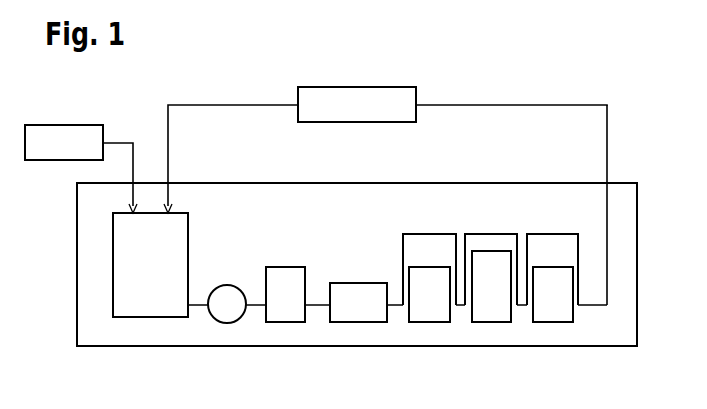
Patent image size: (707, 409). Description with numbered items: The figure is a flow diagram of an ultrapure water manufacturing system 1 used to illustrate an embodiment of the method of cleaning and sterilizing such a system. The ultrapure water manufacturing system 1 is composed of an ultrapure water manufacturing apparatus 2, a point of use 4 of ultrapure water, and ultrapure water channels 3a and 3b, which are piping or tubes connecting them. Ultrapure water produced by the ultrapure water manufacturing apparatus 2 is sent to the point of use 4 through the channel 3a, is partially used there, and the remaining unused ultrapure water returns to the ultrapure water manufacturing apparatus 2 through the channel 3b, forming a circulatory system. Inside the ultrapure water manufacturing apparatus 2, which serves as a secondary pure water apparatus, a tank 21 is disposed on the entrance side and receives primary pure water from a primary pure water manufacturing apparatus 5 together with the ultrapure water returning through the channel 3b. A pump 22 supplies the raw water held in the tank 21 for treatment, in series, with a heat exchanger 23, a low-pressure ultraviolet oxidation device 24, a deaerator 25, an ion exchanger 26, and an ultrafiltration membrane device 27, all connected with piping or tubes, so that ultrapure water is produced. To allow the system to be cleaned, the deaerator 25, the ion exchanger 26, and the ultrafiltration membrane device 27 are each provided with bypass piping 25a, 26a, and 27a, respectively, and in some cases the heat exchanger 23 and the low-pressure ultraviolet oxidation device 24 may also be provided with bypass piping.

The ultrapure water manufacturing system 1 is at (612, 101).
The ultrapure water manufacturing apparatus 2 is at (77, 341).
The ultrapure water channel 3a is at (506, 105).
The ultrapure water channel 3b is at (221, 105).
The point of use 4 is at (360, 87).
The primary pure water manufacturing apparatus 5 is at (64, 125).
The tank 21 is at (147, 318).
The pump 22 is at (225, 323).
The heat exchanger 23 is at (285, 322).
The low-pressure ultraviolet oxidation device 24 is at (355, 322).
The deaerator 25 is at (430, 322).
The bypass piping 25a is at (432, 234).
The ion exchanger 26 is at (488, 322).
The bypass piping 26a is at (494, 234).
The ultrafiltration membrane device 27 is at (552, 322).
The bypass piping 27a is at (560, 234).